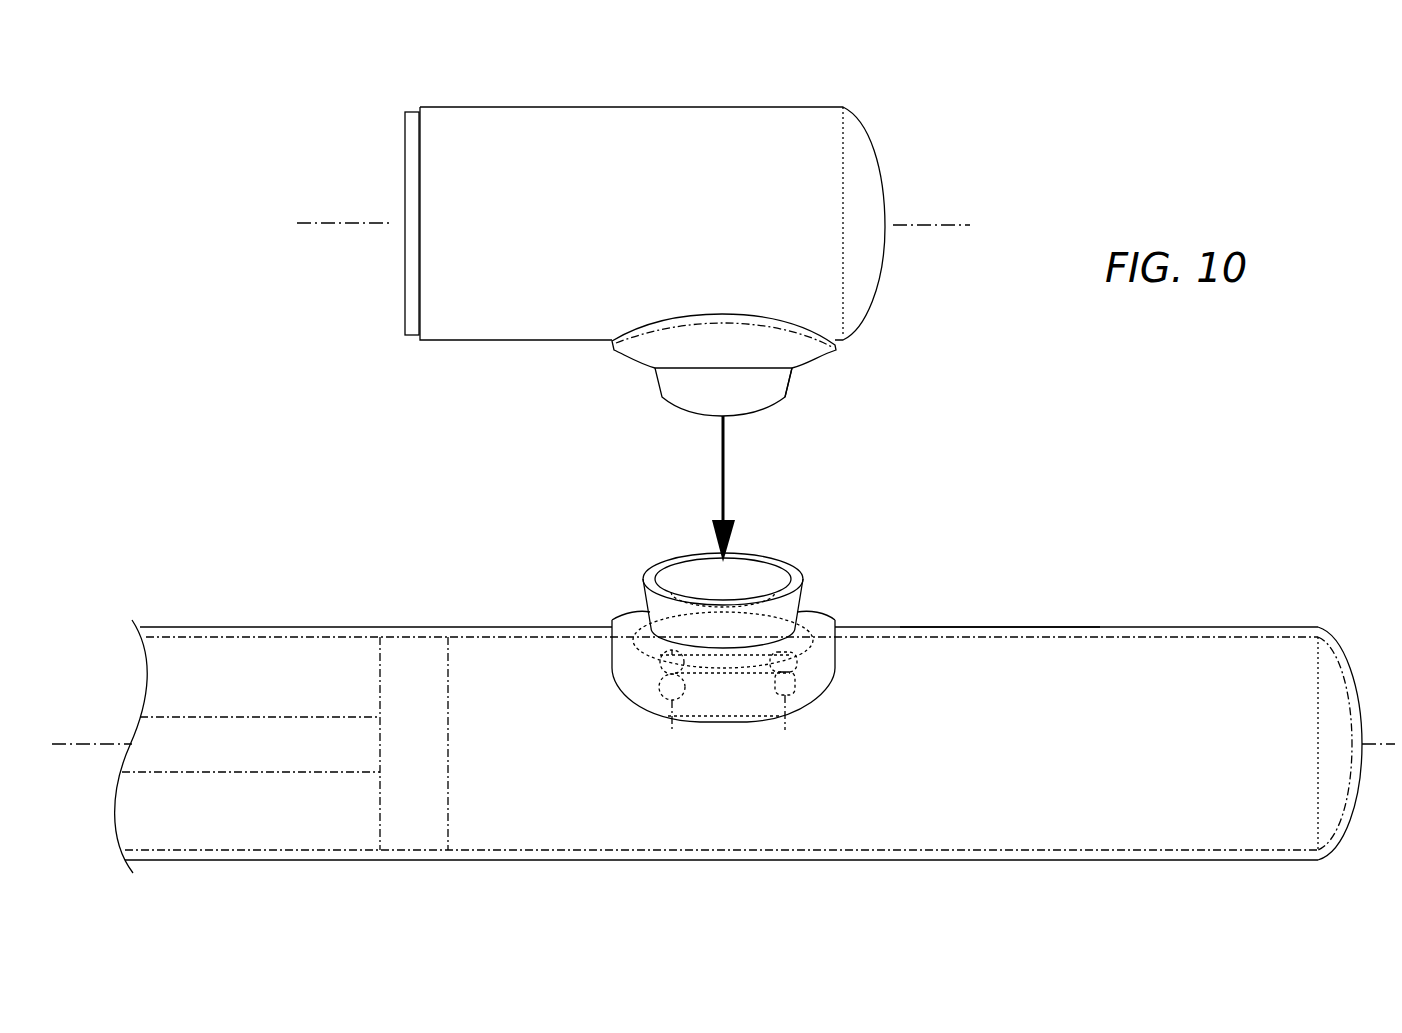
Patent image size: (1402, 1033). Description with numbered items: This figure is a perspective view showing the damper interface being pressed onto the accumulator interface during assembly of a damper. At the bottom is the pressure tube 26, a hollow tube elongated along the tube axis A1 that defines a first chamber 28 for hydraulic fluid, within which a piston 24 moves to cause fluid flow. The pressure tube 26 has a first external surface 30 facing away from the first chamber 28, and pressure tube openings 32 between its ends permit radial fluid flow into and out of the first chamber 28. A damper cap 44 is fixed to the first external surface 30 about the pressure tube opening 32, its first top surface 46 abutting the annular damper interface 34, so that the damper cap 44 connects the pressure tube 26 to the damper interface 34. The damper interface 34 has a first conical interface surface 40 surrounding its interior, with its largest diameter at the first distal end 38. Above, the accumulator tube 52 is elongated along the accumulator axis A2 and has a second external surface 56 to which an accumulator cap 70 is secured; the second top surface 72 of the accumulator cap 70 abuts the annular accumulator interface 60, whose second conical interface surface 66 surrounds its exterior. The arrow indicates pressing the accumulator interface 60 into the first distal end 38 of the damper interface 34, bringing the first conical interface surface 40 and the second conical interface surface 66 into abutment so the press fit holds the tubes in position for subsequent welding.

The piston 24 is at (418, 826).
The pressure tube 26 is at (968, 862).
The first chamber 28 is at (1058, 683).
The first external surface 30 is at (955, 627).
The pressure tube opening 32 is at (785, 700).
The damper interface 34 is at (800, 604).
The first distal end 38 is at (780, 556).
The first conical interface surface 40 is at (694, 576).
The damper cap 44 is at (835, 650).
The first top surface 46 is at (813, 674).
The accumulator tube 52 is at (640, 128).
The second external surface 56 is at (518, 318).
The accumulator interface 60 is at (680, 397).
The second conical interface surface 66 is at (767, 393).
The accumulator cap 70 is at (790, 345).
The second top surface 72 is at (750, 343).
The tube axis A1 is at (85, 744).
The accumulator axis A2 is at (330, 222).